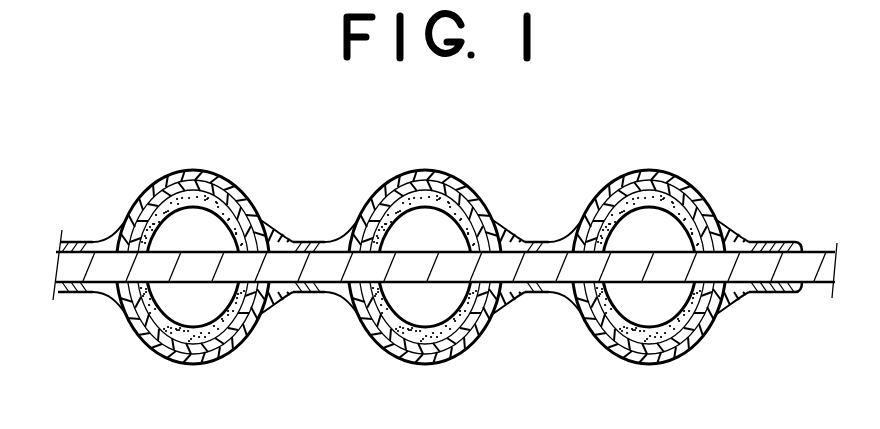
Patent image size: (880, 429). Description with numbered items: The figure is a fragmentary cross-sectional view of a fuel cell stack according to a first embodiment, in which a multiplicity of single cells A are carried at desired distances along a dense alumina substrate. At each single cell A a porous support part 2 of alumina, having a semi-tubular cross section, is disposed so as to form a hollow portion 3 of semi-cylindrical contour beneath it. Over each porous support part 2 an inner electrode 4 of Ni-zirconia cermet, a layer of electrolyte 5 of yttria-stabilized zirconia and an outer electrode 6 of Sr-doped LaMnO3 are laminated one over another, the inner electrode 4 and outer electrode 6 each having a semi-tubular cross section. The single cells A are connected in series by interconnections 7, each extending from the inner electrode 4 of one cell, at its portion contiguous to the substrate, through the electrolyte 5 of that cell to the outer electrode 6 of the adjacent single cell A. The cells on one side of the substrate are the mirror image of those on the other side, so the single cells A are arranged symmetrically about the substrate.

The single cell A is at (418, 237).
The porous support part 2 is at (166, 228).
The hollow portion 3 is at (154, 208).
The inner electrode 4 is at (128, 219).
The electrolyte 5 is at (165, 175).
The outer electrode 6 is at (192, 171).
The interconnection 7 is at (510, 244).